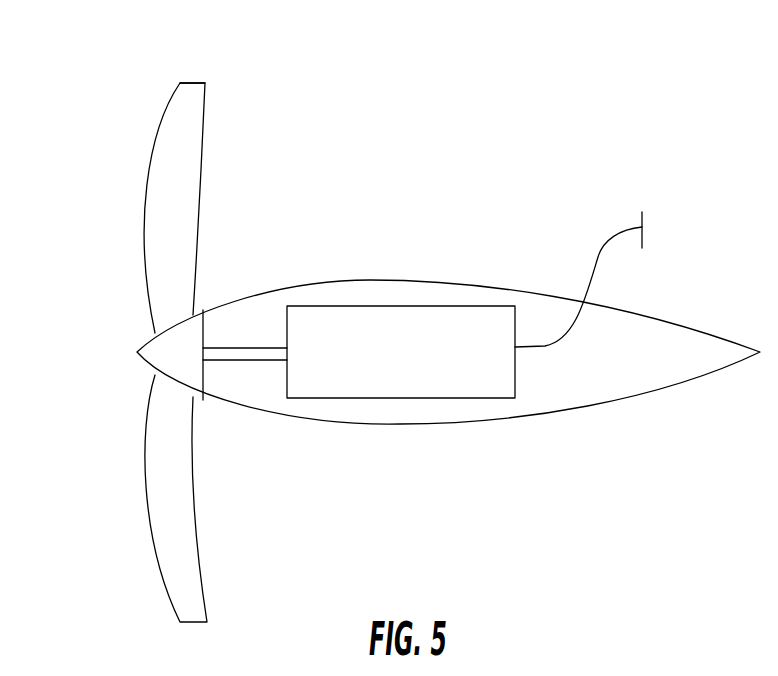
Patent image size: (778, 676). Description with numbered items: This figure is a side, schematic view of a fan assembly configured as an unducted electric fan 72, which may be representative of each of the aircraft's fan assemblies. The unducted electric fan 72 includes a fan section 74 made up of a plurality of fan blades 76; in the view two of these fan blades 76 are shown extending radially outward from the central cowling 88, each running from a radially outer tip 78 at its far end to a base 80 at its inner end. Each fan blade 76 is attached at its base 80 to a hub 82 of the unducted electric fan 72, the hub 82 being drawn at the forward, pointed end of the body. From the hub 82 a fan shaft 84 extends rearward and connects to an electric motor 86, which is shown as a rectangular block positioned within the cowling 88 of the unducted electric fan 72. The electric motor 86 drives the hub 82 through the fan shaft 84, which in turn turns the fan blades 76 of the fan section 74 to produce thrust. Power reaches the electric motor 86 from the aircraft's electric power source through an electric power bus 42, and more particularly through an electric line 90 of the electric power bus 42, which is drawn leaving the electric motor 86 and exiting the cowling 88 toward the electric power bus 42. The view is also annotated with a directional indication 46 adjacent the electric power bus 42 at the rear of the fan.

The unducted electric fan 72 is at (449, 134).
The fan section 74 is at (38, 274).
The fan blades 76 is at (197, 188).
The radially outer tip 78 is at (201, 64).
The base 80 is at (130, 331).
The hub 82 is at (167, 355).
The fan shaft 84 is at (257, 348).
The electric motor 86 is at (420, 319).
The cowling 88 is at (590, 410).
The electric line 90 is at (598, 257).
The electric power bus 42 is at (632, 206).
The wind direction 46 is at (630, 275).